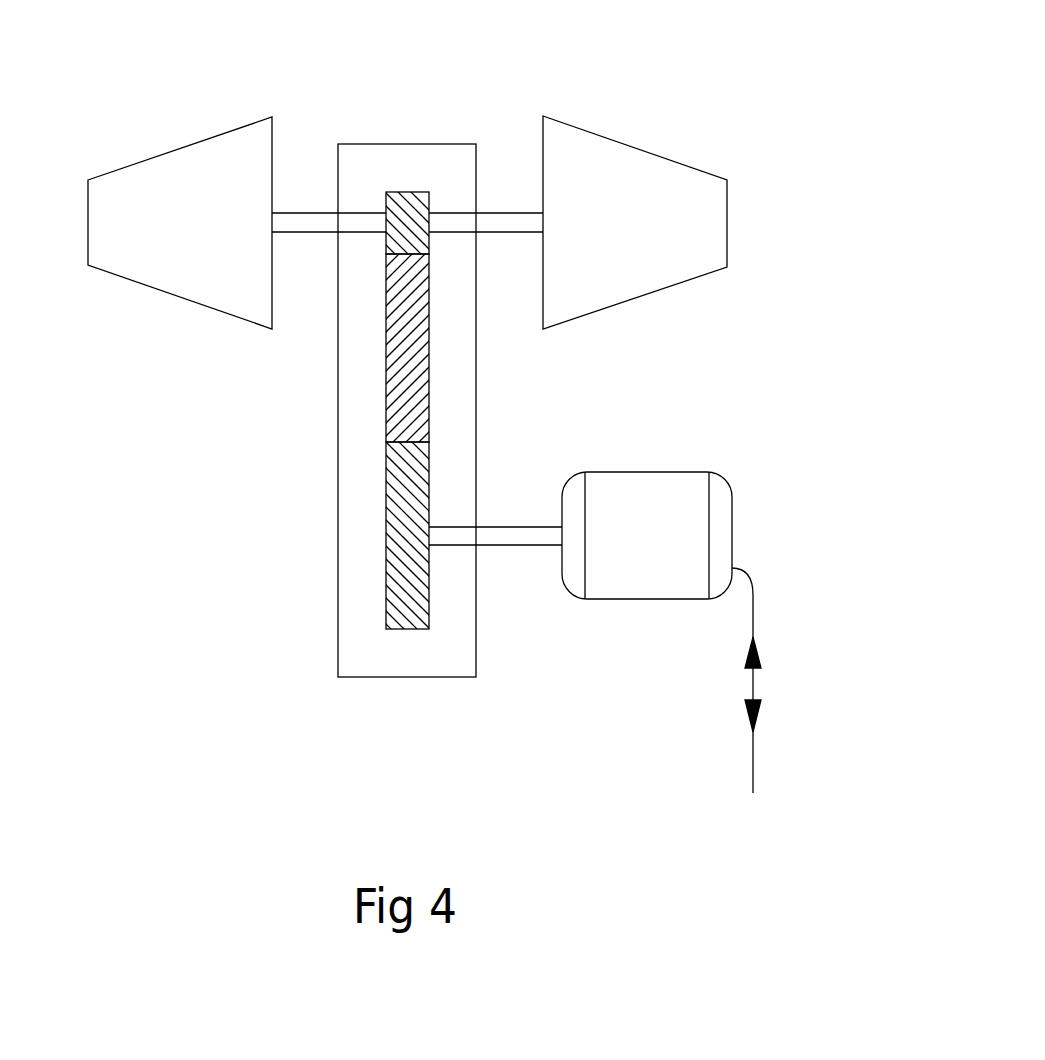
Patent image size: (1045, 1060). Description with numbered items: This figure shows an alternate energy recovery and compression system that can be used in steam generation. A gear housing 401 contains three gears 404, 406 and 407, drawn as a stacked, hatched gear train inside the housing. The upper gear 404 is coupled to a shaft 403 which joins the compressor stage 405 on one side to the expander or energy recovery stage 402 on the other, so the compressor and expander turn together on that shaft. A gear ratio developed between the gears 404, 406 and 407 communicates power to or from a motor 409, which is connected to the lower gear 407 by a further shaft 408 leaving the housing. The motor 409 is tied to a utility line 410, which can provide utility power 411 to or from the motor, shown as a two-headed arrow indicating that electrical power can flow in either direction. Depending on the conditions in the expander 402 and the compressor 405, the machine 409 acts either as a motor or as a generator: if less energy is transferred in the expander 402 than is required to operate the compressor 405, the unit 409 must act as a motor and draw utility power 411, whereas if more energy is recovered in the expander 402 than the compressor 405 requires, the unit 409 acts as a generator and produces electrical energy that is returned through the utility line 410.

The gear housing 401 is at (445, 144).
The expander or energy recovery stage 402 is at (627, 143).
The shaft 403 is at (320, 232).
The gear 404 is at (385, 192).
The compressor stage 405 is at (188, 143).
The gear 406 is at (430, 400).
The gear 407 is at (385, 503).
The motor shaft 408 is at (507, 545).
The motor 409 is at (732, 527).
The utility line 410 is at (753, 600).
The utility power 411 is at (751, 752).